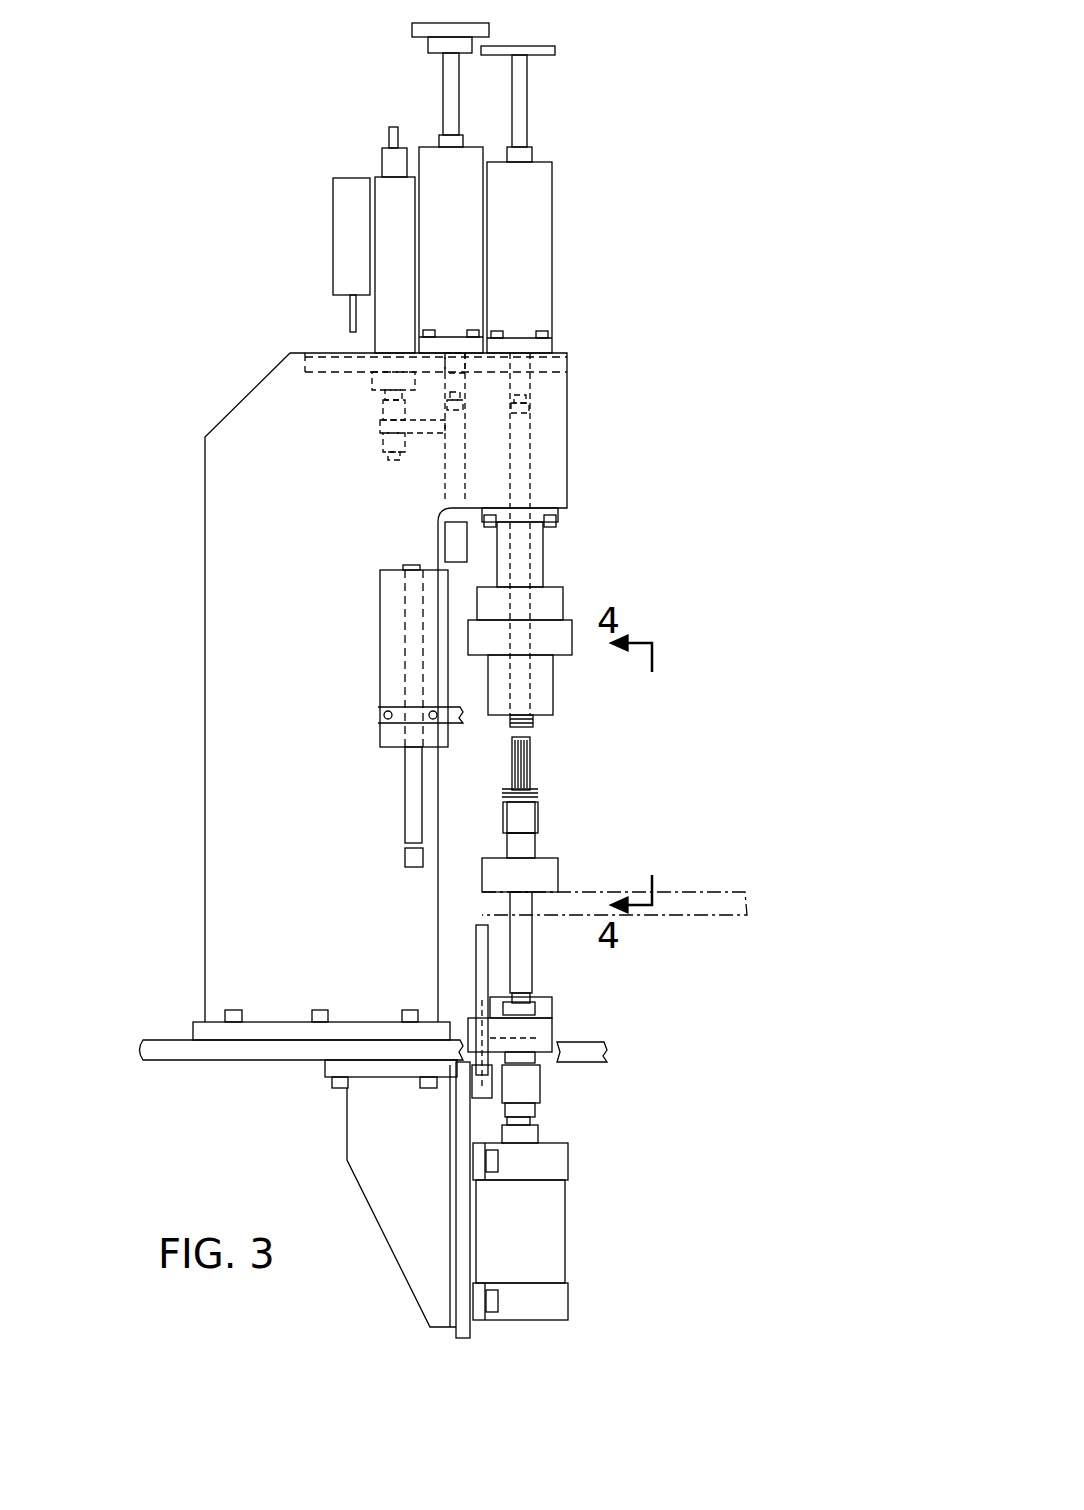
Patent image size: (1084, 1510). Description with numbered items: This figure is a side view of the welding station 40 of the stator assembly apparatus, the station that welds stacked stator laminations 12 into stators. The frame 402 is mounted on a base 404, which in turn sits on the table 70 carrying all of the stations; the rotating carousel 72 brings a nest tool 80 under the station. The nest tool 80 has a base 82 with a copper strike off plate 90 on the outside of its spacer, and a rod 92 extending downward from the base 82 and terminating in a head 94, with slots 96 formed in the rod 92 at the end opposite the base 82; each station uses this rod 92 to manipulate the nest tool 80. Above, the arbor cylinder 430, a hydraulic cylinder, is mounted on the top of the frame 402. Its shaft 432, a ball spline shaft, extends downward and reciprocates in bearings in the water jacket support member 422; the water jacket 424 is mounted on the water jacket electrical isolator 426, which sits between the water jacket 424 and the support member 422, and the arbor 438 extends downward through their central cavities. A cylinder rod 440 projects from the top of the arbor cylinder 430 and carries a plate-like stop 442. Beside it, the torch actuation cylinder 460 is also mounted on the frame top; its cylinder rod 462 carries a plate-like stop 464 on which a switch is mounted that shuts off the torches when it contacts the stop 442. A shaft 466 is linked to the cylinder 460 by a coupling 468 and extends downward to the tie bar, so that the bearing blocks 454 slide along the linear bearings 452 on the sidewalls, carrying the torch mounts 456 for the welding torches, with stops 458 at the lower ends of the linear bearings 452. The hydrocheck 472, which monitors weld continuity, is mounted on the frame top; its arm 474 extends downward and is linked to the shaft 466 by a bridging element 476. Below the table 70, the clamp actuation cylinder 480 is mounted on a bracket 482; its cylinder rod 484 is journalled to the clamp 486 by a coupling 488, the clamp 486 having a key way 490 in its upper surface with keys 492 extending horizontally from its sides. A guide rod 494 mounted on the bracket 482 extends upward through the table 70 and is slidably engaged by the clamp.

The stator laminations 12 is at (535, 790).
The welding station 40 is at (693, 323).
The table 70 is at (138, 1050).
The carousel 72 is at (693, 917).
The nest tool 80 is at (623, 788).
The base 82 is at (532, 845).
The strike off plate 90 is at (538, 820).
The rod 92 is at (525, 958).
The head 94 is at (543, 1055).
The slots 96 is at (530, 998).
The frame 402 is at (240, 748).
The base 404 is at (203, 1025).
The water jacket support member 422 is at (543, 570).
The water jacket 424 is at (553, 690).
The water jacket electrical isolator 426 is at (563, 607).
The arbor cylinder 430 is at (528, 280).
The shaft 432 is at (530, 477).
The arbor 438 is at (530, 724).
The cylinder rod 440 is at (520, 120).
The stop 442 is at (555, 52).
The linear bearings 452 is at (405, 800).
The bearing blocks 454 is at (385, 620).
The torch mounts 456 is at (405, 712).
The stops 458 is at (405, 860).
The torch actuation cylinder 460 is at (440, 175).
The cylinder rod 462 is at (449, 85).
The stop 464 is at (412, 30).
The shaft 466 is at (467, 420).
The coupling 468 is at (467, 383).
The hydrocheck 472 is at (383, 218).
The arm 474 is at (382, 405).
The bridging element 476 is at (380, 433).
The clamp actuation cylinder 480 is at (543, 1240).
The bracket 482 is at (465, 1338).
The cylinder rod 484 is at (535, 1122).
The clamp 486 is at (495, 1042).
The coupling 488 is at (535, 1095).
The key way 490 is at (552, 1010).
The keys 492 is at (512, 993).
The guide rod 494 is at (478, 948).